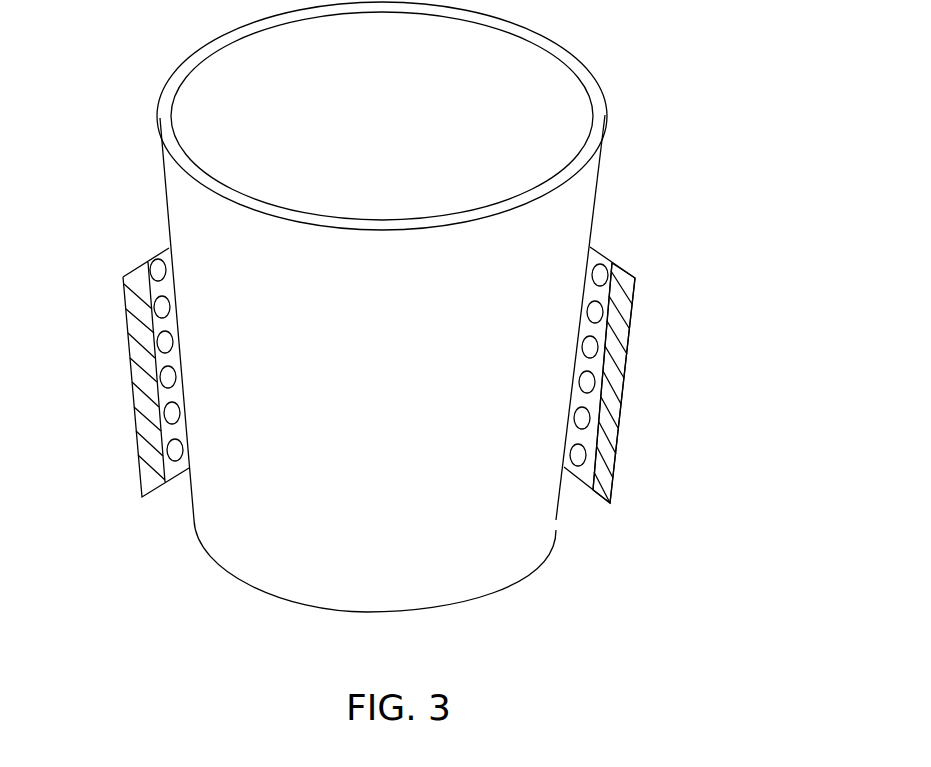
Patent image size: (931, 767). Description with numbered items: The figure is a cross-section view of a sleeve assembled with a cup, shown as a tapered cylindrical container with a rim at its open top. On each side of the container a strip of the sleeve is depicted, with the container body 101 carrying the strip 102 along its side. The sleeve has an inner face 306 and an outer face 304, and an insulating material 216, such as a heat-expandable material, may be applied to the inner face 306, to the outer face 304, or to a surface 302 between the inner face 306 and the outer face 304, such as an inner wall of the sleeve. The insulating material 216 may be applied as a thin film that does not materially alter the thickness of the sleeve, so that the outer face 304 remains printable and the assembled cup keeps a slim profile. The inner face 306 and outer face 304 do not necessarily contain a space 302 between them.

The container body 101 is at (567, 220).
The fastening strip 102 is at (638, 343).
The insulating material 216 is at (177, 413).
The surface between the inner face and the outer face 302 is at (158, 253).
The outer face 304 is at (622, 403).
The inner face 306 is at (568, 437).